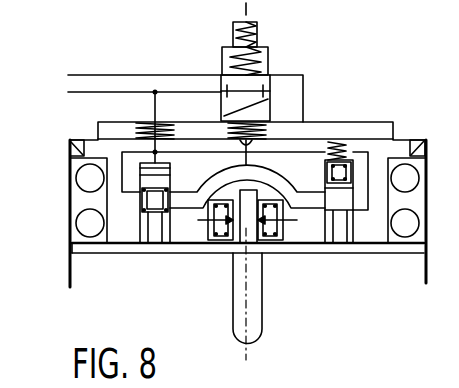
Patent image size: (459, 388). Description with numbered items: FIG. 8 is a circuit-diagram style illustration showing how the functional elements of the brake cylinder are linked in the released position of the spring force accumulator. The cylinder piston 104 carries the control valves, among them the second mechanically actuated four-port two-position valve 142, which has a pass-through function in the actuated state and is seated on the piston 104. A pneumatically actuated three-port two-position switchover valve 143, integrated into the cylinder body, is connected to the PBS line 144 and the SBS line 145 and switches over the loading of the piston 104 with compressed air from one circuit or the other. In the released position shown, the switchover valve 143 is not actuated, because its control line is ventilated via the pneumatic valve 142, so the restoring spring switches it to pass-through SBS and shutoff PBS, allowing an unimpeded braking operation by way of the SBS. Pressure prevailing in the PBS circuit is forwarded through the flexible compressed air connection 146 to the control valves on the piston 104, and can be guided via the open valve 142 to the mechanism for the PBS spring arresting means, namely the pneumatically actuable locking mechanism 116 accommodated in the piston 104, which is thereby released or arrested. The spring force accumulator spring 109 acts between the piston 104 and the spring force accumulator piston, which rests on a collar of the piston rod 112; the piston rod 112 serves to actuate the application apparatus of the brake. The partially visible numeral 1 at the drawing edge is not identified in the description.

The device housing 1 is at (264, 204).
The piston 104 is at (122, 202).
The spring force accumulator spring 109 is at (83, 227).
The piston rod 112 is at (262, 340).
The locking mechanism 116 is at (268, 244).
The second mechanically actuated 4/2-way valve 142 is at (352, 172).
The pneumatically actuated 3/2-way valve 143 is at (272, 62).
The PBS line 144 is at (164, 89).
The SBS line 145 is at (189, 74).
The flexible connecting line 146 is at (137, 132).